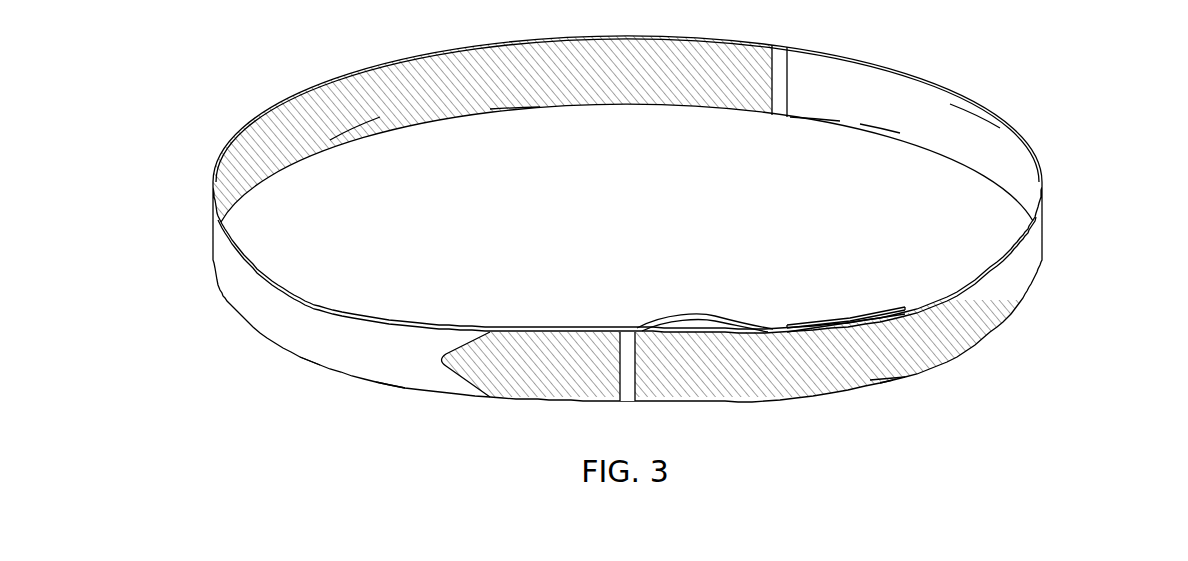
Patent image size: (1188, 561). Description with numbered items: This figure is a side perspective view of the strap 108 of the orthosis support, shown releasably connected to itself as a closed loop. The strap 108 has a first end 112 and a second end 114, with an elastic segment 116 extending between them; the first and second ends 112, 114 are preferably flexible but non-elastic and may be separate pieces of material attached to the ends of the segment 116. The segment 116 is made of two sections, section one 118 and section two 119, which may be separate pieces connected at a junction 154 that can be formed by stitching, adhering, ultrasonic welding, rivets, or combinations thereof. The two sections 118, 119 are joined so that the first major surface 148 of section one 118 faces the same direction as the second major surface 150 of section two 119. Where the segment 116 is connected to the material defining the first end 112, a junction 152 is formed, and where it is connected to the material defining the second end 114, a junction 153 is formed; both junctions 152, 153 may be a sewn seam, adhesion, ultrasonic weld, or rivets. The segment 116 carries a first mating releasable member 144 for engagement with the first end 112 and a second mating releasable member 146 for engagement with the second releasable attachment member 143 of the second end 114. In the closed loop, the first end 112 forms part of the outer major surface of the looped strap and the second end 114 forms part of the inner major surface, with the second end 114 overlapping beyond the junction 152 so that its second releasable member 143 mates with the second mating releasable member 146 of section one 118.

The strap 108 is at (1033, 322).
The first end 112 is at (527, 394).
The second end 114 is at (842, 323).
The segment 116 is at (310, 82).
The section one 118 is at (948, 105).
The section two 119 is at (345, 138).
The second releasable attachment member 143 is at (888, 312).
The first mating releasable member 144 is at (389, 386).
The second mating releasable member 146 is at (876, 125).
The first major surface 148 is at (812, 118).
The second major surface 150 is at (513, 108).
The junction 152 is at (626, 333).
The junction 153 is at (780, 326).
The junction 154 is at (779, 52).